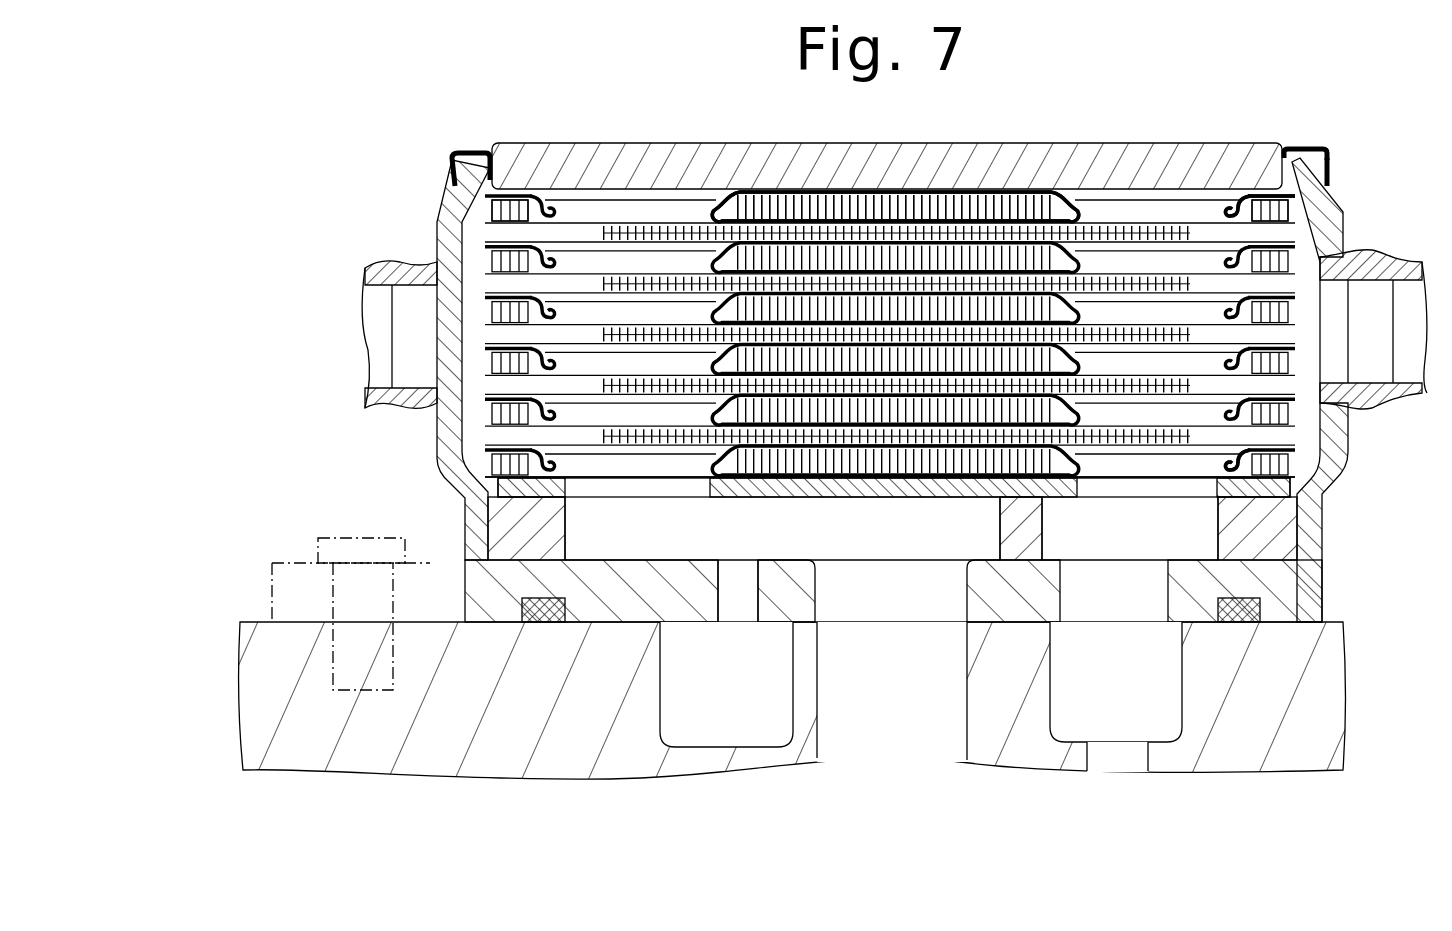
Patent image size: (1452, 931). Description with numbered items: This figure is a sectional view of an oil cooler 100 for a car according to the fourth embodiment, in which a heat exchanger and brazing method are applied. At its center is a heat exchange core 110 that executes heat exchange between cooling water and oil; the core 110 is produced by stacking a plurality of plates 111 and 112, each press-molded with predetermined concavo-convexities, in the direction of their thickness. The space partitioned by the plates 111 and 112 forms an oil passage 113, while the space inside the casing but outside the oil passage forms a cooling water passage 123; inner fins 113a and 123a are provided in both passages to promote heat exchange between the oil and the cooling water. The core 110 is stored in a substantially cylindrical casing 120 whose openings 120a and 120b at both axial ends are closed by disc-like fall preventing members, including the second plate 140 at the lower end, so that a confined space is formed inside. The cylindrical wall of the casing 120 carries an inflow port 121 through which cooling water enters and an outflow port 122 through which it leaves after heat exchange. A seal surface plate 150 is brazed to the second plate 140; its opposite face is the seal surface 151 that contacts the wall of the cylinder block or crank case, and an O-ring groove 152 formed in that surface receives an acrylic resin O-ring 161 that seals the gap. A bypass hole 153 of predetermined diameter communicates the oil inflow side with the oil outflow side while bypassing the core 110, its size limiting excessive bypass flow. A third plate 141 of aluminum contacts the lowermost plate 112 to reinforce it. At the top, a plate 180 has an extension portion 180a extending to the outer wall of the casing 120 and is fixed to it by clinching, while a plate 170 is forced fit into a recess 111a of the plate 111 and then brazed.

The oil cooler 100 is at (427, 153).
The heat exchange core 110 is at (598, 262).
The plate 111 is at (1290, 462).
The recess 111a is at (1262, 162).
The plate 112 is at (1292, 240).
The oil passage 113 is at (1000, 228).
The inner fin 113a is at (895, 228).
The casing 120 is at (1345, 258).
The opening 120a is at (1095, 188).
The opening 120b is at (1300, 500).
The inflow port 121 is at (364, 298).
The outflow port 122 is at (1365, 373).
The cooling water passage 123 is at (478, 492).
The inner fin 123a is at (788, 212).
The second plate 140 is at (1278, 540).
The third plate 141 is at (545, 503).
The seal surface plate 150 is at (1300, 585).
The seal surface 151 is at (1238, 620).
The O-ring groove 152 is at (1242, 615).
The bypass hole 153 is at (722, 583).
The O-ring 161 is at (1240, 610).
The plate 170 is at (1200, 158).
The plate 180 is at (1322, 168).
The extension portion 180a is at (1322, 182).